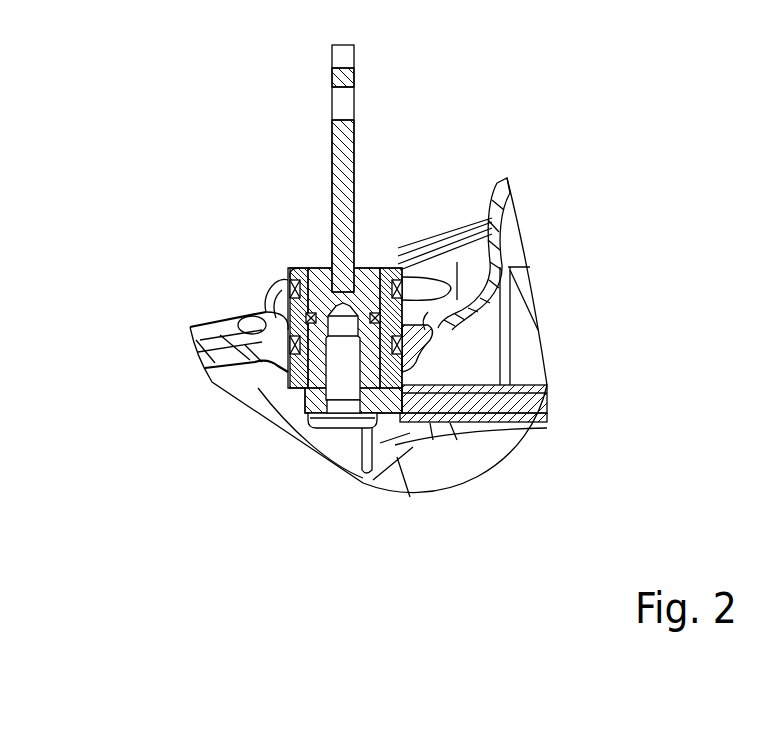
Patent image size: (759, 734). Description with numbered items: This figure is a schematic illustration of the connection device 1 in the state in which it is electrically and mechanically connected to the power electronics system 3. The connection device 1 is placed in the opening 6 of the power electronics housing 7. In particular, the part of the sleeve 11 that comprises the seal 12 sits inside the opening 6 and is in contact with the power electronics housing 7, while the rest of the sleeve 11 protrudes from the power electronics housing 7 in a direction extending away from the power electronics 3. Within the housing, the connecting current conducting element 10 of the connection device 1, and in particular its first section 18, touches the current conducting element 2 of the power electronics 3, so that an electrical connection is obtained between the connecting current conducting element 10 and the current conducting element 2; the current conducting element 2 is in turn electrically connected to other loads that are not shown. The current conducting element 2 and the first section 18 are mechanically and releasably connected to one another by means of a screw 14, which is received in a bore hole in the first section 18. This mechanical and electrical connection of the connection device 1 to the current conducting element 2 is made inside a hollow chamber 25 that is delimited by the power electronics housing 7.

The connection device 1 is at (255, 152).
The current conducting element 2 is at (510, 425).
The power electronics system 3 is at (548, 250).
The opening 6 is at (452, 340).
The power electronics housing 7 is at (482, 298).
The connecting current conducting element 10 is at (367, 243).
The sleeve 11 is at (268, 298).
The seal 12 is at (192, 325).
The screw 14 is at (258, 385).
The first section 18 is at (320, 266).
The hollow chamber 25 is at (370, 428).